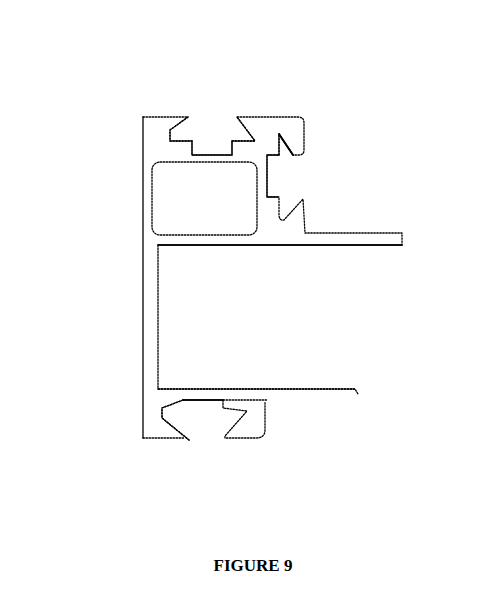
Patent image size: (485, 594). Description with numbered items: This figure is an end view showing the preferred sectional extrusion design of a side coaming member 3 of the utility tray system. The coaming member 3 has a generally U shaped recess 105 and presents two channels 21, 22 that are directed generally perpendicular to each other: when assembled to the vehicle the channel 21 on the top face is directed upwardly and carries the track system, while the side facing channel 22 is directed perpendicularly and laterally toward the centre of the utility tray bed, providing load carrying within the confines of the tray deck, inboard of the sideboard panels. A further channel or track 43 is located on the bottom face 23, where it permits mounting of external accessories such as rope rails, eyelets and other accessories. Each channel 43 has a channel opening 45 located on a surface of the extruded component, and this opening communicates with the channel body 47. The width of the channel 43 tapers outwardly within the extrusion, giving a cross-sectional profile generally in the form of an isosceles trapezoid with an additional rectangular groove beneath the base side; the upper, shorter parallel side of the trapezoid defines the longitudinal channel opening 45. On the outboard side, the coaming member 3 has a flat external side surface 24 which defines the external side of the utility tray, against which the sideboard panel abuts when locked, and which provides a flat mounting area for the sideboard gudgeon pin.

The coaming member 3 is at (264, 255).
The channel 21 is at (210, 142).
The channel 22 is at (278, 182).
The bottom face 23 is at (201, 408).
The side surface 24 is at (131, 331).
The channel 43 is at (218, 130).
The channel opening 45 is at (214, 104).
The channel body 47 is at (182, 136).
The U shaped recess 105 is at (253, 381).